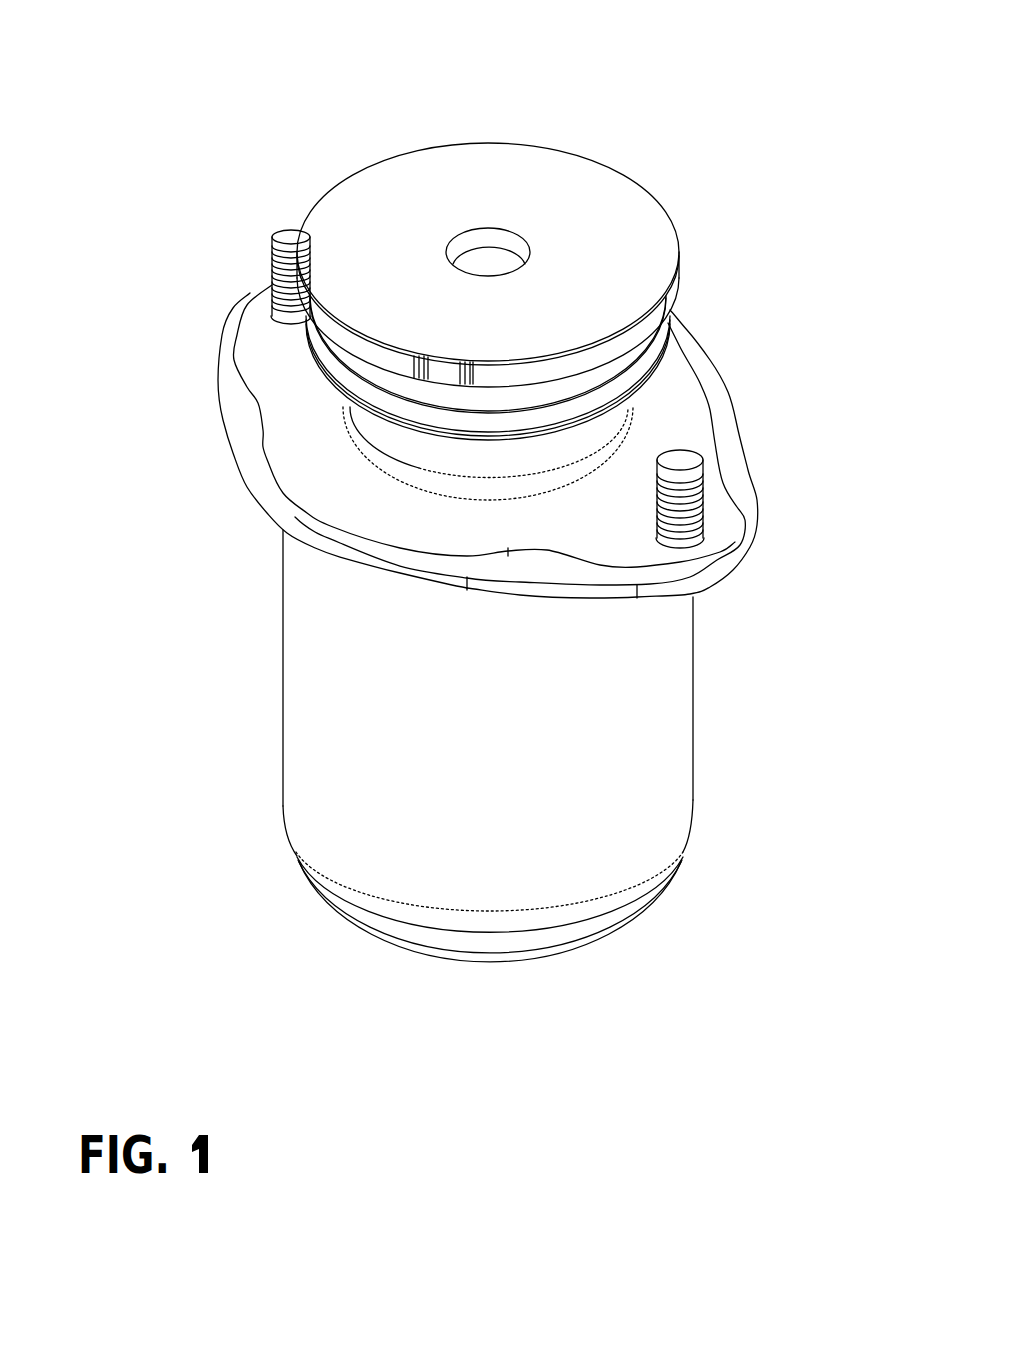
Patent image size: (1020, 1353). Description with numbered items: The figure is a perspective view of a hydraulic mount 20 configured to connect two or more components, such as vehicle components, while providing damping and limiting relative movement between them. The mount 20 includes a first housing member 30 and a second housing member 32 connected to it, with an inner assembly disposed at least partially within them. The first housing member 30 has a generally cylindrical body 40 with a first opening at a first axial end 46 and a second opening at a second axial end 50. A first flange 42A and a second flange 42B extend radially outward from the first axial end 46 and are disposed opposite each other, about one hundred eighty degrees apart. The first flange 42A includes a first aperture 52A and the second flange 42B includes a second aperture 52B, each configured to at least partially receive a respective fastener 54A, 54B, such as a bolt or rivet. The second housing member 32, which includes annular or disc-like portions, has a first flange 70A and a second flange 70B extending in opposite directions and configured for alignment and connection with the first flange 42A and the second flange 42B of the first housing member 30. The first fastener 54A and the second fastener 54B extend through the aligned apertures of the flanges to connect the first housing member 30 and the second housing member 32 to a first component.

The mount 20 is at (382, 95).
The first housing member 30 is at (217, 697).
The second housing member 32 is at (190, 344).
The body 40 is at (306, 745).
The first flange 42A is at (225, 316).
The second flange 42B is at (710, 578).
The first axial end 46 is at (218, 517).
The second axial end 50 is at (247, 855).
The first aperture 52A is at (283, 317).
The second aperture 52B is at (703, 528).
The first fastener 54A is at (273, 257).
The second fastener 54B is at (703, 478).
The first flange 70A is at (245, 295).
The second flange 70B is at (703, 553).